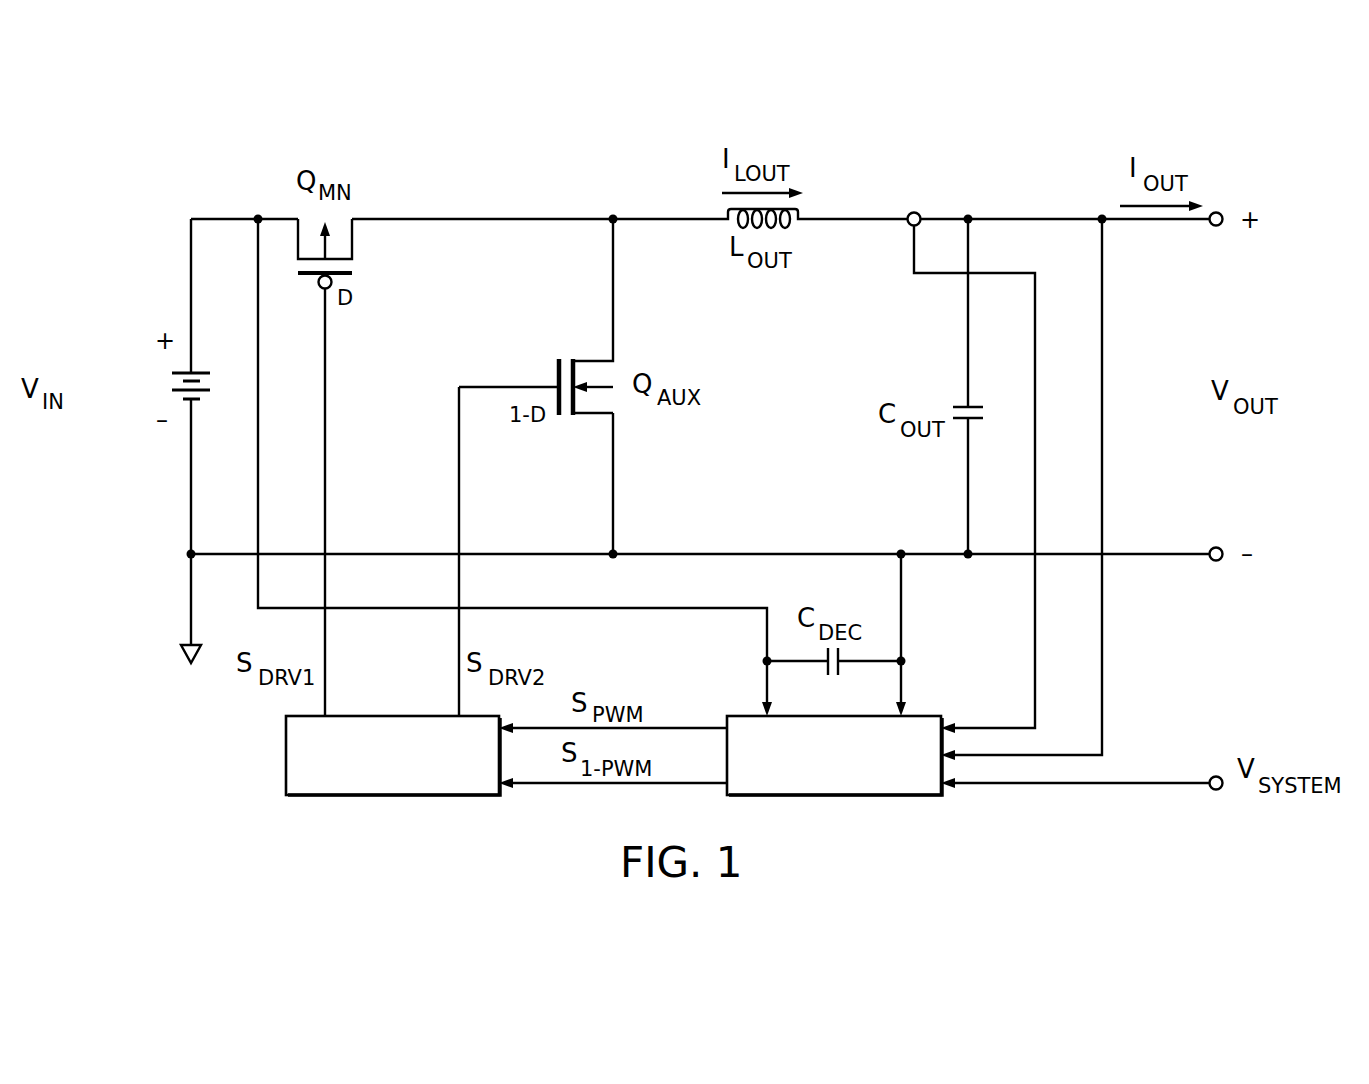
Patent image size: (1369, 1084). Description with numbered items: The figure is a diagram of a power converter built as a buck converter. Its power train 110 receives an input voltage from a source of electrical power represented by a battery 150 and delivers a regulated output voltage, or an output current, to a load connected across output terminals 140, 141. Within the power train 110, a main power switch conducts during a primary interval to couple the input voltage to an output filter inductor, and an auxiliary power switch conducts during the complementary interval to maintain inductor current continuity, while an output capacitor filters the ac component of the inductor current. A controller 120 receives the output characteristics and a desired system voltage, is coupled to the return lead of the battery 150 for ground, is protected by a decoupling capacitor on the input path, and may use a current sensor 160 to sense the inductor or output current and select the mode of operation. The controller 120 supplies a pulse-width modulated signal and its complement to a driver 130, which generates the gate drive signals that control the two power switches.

The power train 110 is at (557, 372).
The controller 120 is at (835, 797).
The driver 130 is at (392, 797).
The output terminal 140 is at (1218, 212).
The output terminal 141 is at (1218, 562).
The battery 150 is at (170, 380).
The current sensor 160 is at (915, 212).